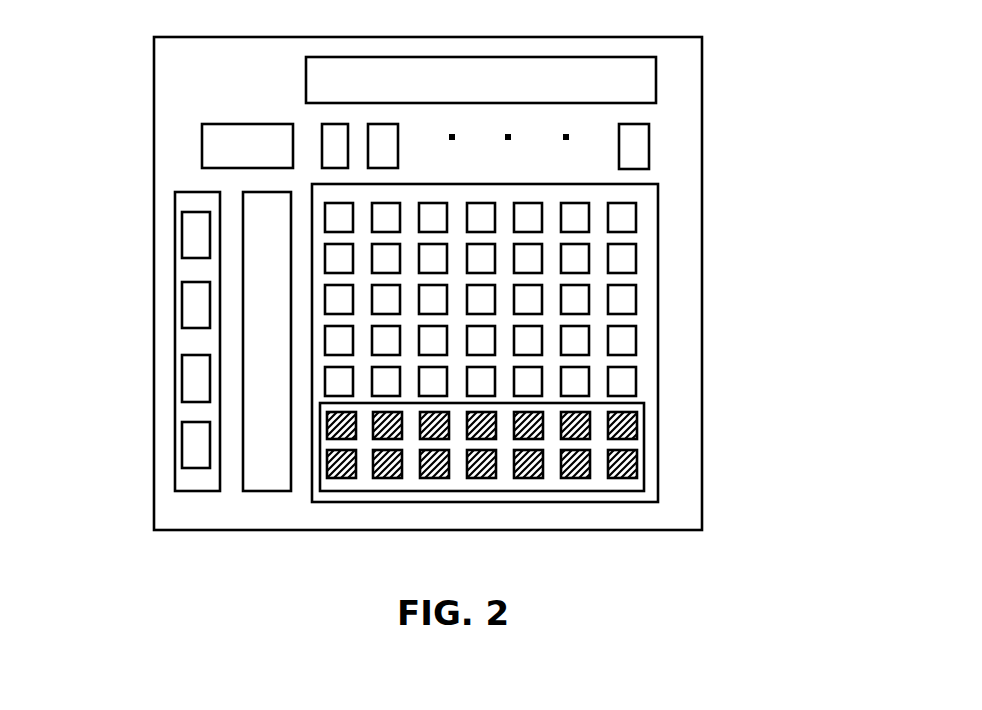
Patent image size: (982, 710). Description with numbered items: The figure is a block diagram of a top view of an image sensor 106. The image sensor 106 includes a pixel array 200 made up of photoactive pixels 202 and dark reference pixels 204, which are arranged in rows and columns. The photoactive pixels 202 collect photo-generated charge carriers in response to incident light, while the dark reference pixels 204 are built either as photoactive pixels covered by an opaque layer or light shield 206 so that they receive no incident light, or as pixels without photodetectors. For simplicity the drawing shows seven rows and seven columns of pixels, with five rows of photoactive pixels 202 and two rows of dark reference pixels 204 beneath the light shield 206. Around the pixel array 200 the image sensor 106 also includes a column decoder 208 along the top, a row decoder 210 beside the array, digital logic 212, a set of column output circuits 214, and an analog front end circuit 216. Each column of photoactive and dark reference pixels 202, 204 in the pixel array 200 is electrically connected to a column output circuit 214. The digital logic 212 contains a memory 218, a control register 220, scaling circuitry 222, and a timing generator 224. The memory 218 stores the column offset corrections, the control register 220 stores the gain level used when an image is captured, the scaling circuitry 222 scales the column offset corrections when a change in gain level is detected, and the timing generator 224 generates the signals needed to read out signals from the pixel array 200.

The image sensor 106 is at (772, 75).
The pixel array 200 is at (658, 307).
The photoactive pixels 202 is at (630, 220).
The dark reference pixels 204 is at (624, 463).
The light shield 206 is at (647, 410).
The column decoder 208 is at (507, 95).
The row decoder 210 is at (270, 458).
The digital logic 212 is at (175, 200).
The column output circuits 214 is at (638, 152).
The analog front end circuit 216 is at (202, 145).
The memory 218 is at (195, 228).
The control register 220 is at (195, 300).
The scaling circuitry 222 is at (195, 374).
The timing generator 224 is at (195, 443).